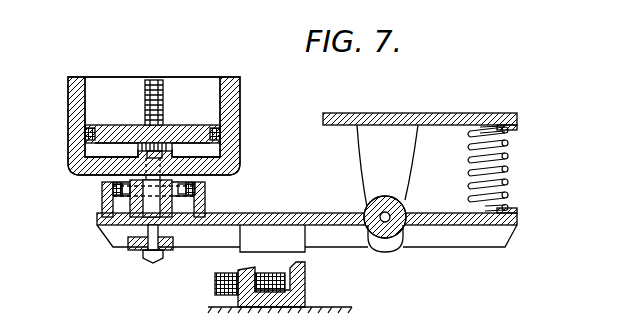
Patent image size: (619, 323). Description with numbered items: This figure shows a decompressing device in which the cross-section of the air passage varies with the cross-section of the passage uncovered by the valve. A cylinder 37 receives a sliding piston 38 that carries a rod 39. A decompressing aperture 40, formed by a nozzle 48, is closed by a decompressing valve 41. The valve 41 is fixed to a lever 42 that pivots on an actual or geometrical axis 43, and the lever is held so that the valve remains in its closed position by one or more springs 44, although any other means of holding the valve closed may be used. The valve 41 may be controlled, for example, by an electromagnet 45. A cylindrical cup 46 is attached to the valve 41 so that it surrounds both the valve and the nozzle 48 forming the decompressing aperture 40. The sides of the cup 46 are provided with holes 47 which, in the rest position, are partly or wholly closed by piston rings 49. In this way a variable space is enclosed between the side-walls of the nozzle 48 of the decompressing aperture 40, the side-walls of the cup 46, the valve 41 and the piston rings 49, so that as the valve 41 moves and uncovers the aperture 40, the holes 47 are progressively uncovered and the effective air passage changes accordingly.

The cylinder 37 is at (238, 166).
The piston 38 is at (207, 124).
The rod 39 is at (165, 101).
The decompressing aperture 40 is at (82, 171).
The decompressing valve 41 is at (135, 228).
The lever 42 is at (350, 213).
The axis 43 is at (388, 222).
The springs 44 is at (507, 134).
The electromagnet 45 is at (306, 278).
The cylindrical cup 46 is at (103, 228).
The holes 47 is at (102, 197).
The nozzle 48 is at (121, 160).
The piston rings 49 is at (110, 188).